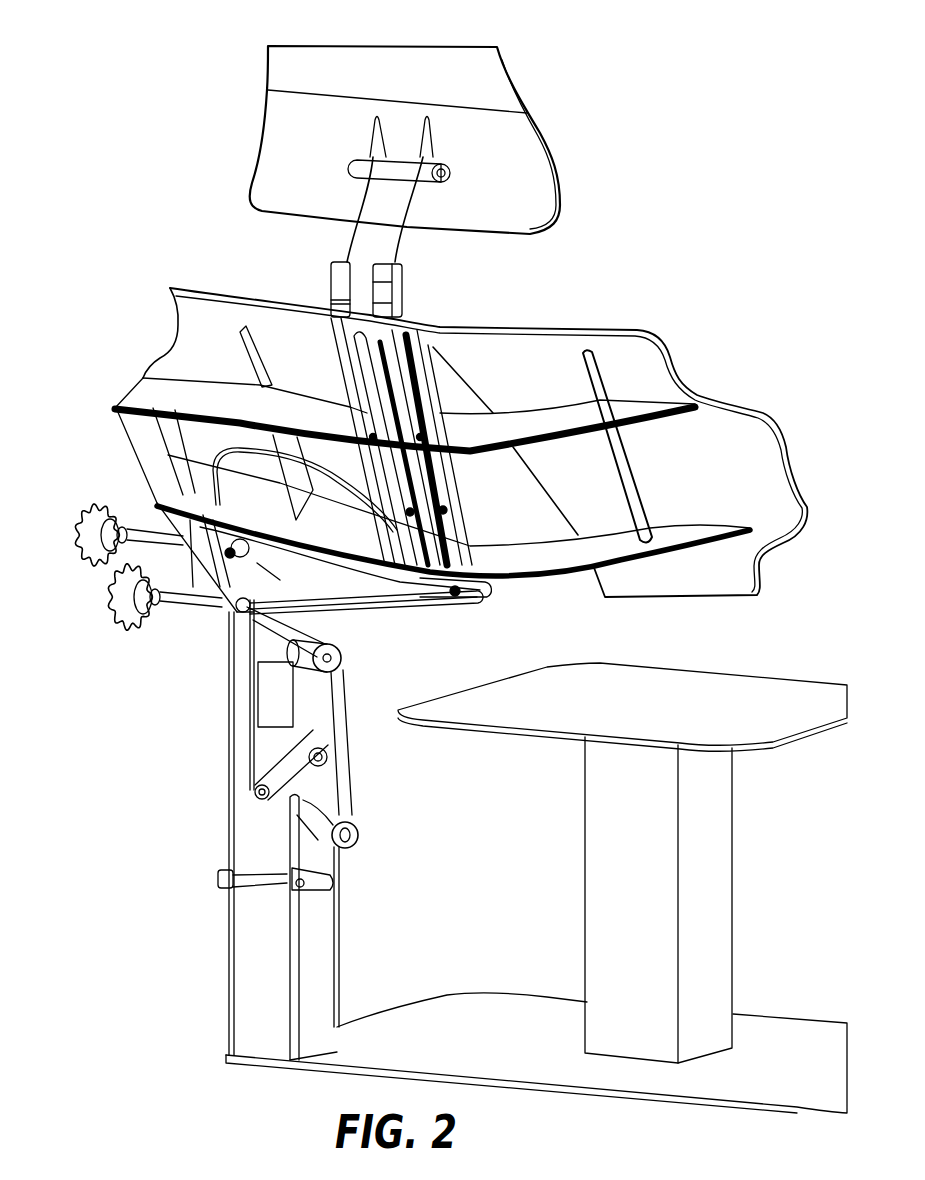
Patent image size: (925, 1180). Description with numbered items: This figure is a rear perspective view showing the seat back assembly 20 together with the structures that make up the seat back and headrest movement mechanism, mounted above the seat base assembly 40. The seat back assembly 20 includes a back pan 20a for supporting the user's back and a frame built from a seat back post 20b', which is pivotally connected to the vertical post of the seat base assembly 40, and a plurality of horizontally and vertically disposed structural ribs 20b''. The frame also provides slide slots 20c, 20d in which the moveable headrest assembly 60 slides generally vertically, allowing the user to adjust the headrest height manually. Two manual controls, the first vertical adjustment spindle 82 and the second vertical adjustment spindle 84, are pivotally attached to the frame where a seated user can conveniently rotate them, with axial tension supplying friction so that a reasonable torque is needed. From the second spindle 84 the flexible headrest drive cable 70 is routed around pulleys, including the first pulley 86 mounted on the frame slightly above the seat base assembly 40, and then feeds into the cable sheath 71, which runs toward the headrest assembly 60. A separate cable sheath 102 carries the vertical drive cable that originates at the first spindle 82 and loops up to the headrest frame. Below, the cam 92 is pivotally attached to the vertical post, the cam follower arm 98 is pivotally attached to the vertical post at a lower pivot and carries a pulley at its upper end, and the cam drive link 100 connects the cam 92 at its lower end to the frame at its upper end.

The moveable headrest assembly 60 is at (497, 47).
The seat back assembly 20 is at (428, 426).
The back pan 20a is at (177, 318).
The structural ribs 20b'' is at (372, 402).
The seat back post 20b' is at (402, 499).
The slide slot 20c is at (440, 415).
The slide slot 20d is at (495, 548).
The cable sheath 102 is at (228, 452).
The first vertical adjustment spindle 82 is at (75, 560).
The second vertical adjustment spindle 84 is at (120, 630).
The cam drive link 100 is at (227, 643).
The first pulley 86 is at (313, 670).
The cable sheath 71 is at (323, 613).
The flexible headrest drive cable 70 is at (350, 753).
The cam 92 is at (272, 797).
The cam follower arm 98 is at (313, 883).
The seat base assembly 40 is at (353, 1070).